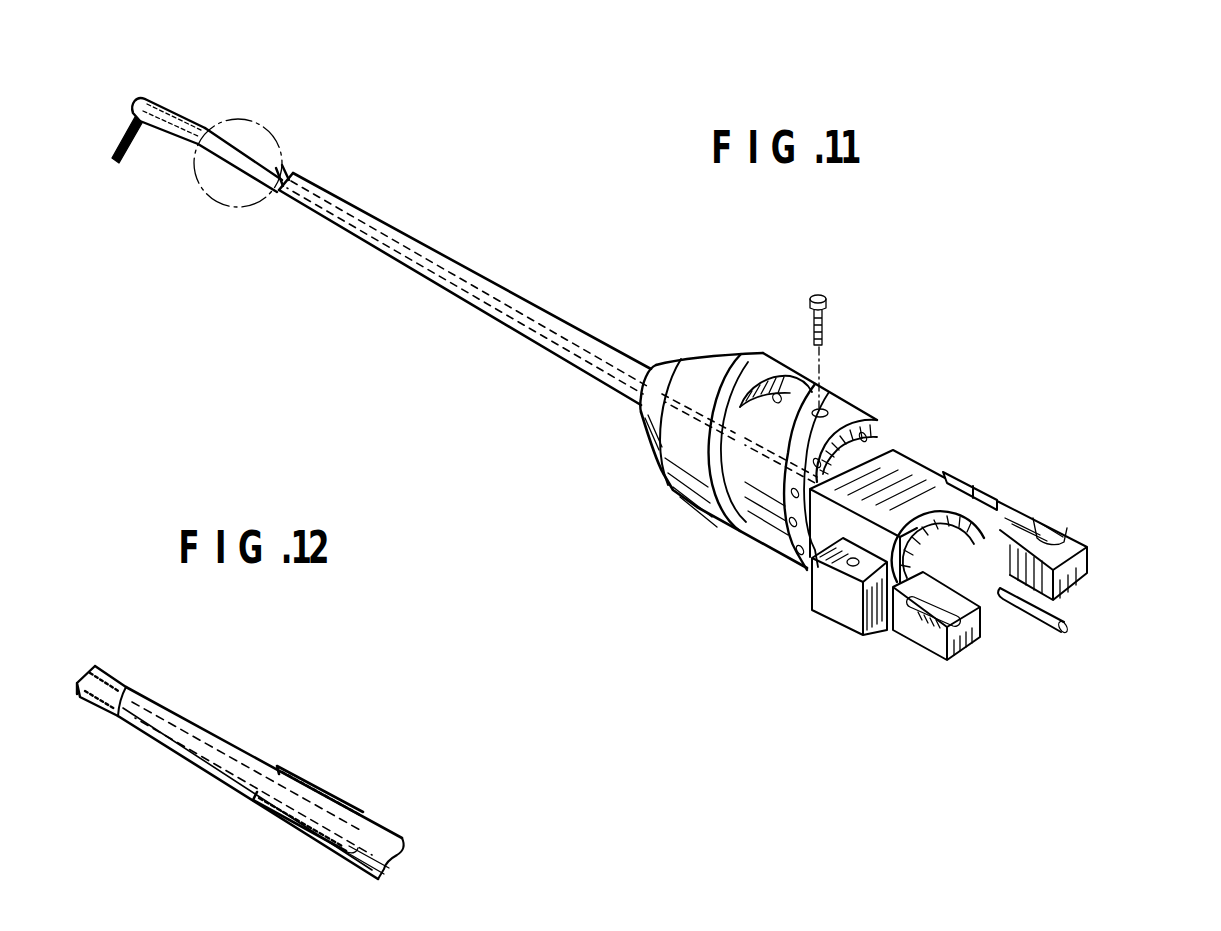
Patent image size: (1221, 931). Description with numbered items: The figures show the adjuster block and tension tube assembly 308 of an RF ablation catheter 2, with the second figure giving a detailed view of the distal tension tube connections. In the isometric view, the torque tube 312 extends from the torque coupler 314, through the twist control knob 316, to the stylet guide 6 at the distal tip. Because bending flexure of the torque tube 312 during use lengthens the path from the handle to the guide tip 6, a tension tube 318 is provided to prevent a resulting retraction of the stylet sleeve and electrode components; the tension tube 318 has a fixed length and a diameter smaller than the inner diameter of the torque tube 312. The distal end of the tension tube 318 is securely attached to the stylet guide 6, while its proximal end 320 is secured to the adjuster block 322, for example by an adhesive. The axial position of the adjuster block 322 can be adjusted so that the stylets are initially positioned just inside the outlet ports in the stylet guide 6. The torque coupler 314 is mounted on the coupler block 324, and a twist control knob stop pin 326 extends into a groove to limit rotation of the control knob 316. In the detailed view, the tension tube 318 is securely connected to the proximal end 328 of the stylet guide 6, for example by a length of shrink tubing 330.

In FIG. 11, the surgical instrument 2 is at (519, 211).
In FIG. 11, the stylet guide 6 is at (182, 102).
In FIG. 11, the adjuster block and tension tube assembly 308 is at (884, 376).
In FIG. 11, the torque tube 312 is at (394, 220).
In FIG. 11, the torque coupler 314 is at (917, 463).
In FIG. 11, the twist control knob 316 is at (659, 489).
In FIG. 11, the tension tube 318 is at (284, 166).
In FIG. 12, the tension tube 318 is at (331, 793).
In FIG. 11, the proximal end 320 is at (1006, 600).
In FIG. 11, the adjuster block 322 is at (1088, 543).
In FIG. 11, the coupler block 324 is at (998, 500).
In FIG. 11, the twist control knob stop pin 326 is at (823, 290).
In FIG. 12, the proximal end 328 is at (118, 676).
In FIG. 11, the shrink tubing 330 is at (222, 132).
In FIG. 12, the shrink tubing 330 is at (210, 733).